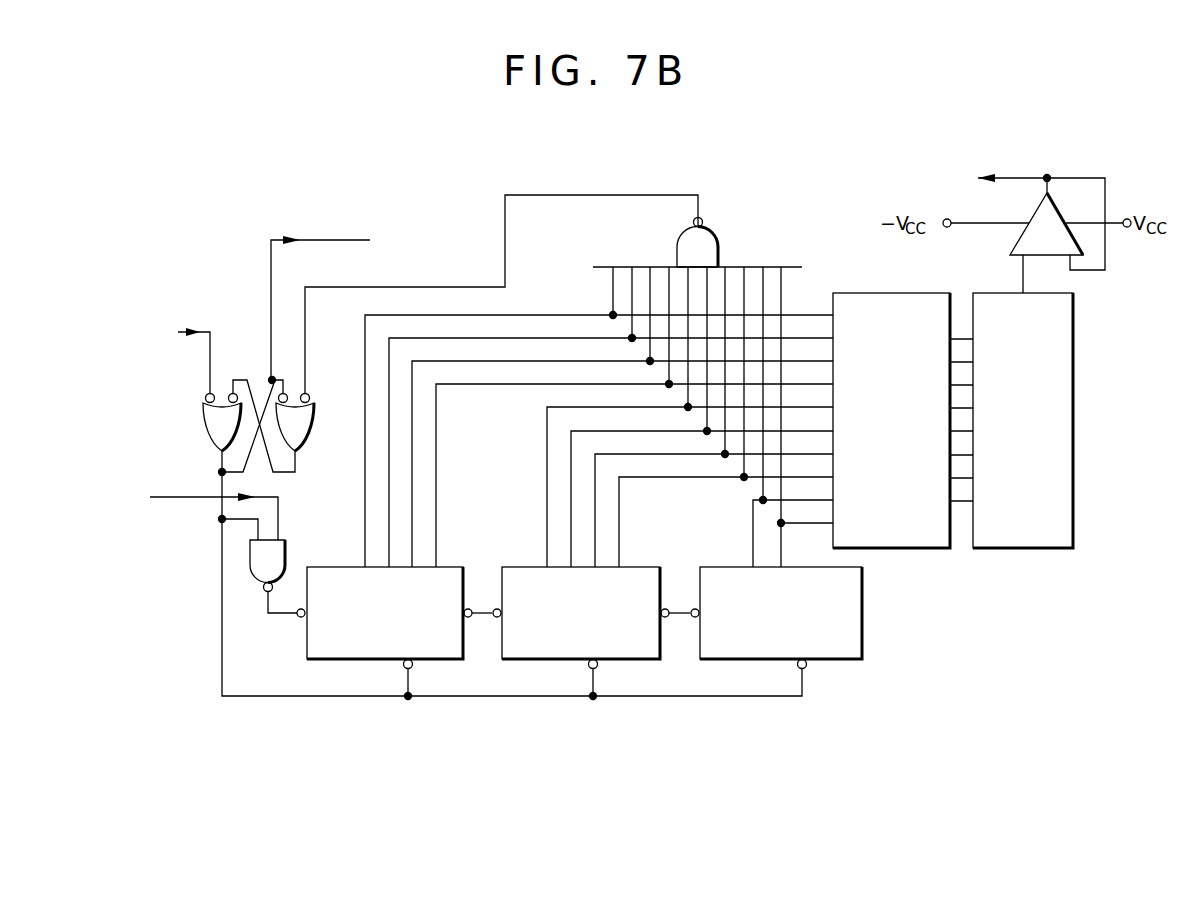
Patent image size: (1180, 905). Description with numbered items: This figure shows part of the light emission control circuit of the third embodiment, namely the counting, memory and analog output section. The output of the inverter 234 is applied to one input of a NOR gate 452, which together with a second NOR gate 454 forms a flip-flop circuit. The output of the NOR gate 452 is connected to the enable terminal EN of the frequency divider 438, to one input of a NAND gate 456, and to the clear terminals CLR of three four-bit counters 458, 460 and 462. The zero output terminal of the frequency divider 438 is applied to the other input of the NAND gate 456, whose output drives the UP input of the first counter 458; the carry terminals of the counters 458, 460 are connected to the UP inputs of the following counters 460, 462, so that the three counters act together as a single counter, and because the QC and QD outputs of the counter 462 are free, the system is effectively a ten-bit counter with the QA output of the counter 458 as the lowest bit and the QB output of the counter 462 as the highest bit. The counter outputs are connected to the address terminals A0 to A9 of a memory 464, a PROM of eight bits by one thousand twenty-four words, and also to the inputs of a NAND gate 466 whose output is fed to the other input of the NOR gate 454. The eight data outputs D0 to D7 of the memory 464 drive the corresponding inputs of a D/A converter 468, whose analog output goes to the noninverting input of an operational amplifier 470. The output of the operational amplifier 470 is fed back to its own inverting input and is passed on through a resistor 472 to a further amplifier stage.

The inverter 234 is at (170, 335).
The frequency divider 438 is at (271, 396).
The NOR gate 452 is at (212, 424).
The NOR gate 454 is at (302, 426).
The NAND gate 456 is at (283, 550).
The 4-bit counter 458 is at (447, 567).
The 4-bit counter 460 is at (645, 567).
The 4-bit counter 462 is at (862, 609).
The memory 464 is at (927, 542).
The NAND gate 466 is at (712, 247).
The D/A converter 468 is at (1047, 544).
The operational amplifier 470 is at (1043, 247).
The resistor 472 is at (986, 208).